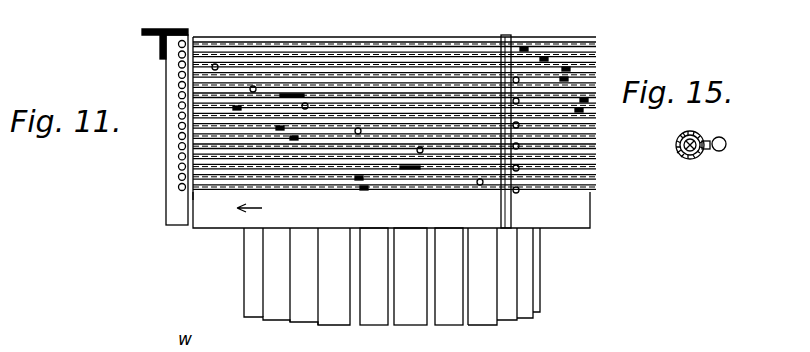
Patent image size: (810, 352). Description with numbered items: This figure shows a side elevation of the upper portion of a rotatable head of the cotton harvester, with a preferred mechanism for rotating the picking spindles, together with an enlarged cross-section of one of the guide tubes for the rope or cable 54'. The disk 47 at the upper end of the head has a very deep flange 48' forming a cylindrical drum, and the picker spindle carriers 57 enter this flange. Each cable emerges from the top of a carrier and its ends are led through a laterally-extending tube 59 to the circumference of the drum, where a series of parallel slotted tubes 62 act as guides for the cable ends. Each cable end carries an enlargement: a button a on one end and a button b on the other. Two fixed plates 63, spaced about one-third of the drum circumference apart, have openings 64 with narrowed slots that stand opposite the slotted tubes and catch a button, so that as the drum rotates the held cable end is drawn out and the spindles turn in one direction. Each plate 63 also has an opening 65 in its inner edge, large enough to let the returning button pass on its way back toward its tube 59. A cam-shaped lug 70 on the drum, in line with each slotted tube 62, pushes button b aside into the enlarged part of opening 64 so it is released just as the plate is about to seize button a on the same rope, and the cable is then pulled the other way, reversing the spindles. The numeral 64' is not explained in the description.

In FIG. 11, the flange 48' is at (417, 100).
In FIG. 11, the plate 63 is at (170, 212).
In FIG. 11, the disk 47 is at (216, 222).
In FIG. 11, the button b is at (505, 40).
In FIG. 11, the opening 65 is at (178, 55).
In FIG. 11, the loop 64' is at (152, 70).
In FIG. 11, the opening 64 is at (159, 120).
In FIG. 11, the button a is at (190, 44).
In FIG. 15, the button a is at (726, 145).
In FIG. 11, the cam-shaped lug 70 is at (545, 58).
In FIG. 11, the slotted tube 62 is at (596, 78).
In FIG. 15, the slotted tube 62 is at (680, 134).
In FIG. 11, the tube 59 is at (380, 188).
In FIG. 11, the picker spindle carrier 57 is at (280, 318).
In FIG. 15, the rope or cable 54' is at (700, 166).